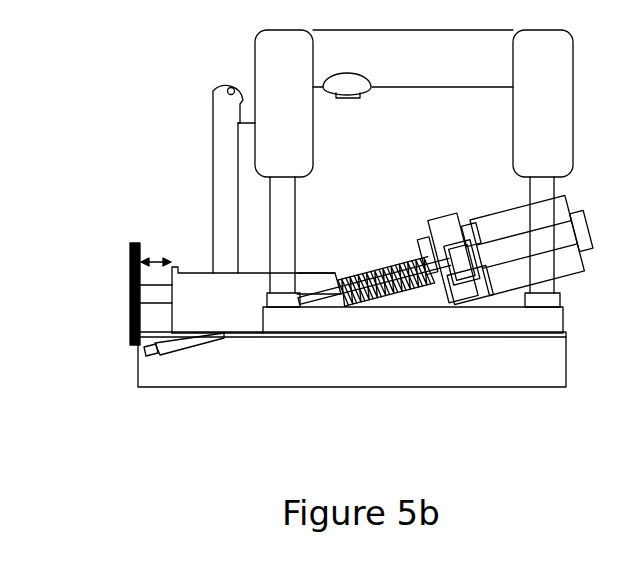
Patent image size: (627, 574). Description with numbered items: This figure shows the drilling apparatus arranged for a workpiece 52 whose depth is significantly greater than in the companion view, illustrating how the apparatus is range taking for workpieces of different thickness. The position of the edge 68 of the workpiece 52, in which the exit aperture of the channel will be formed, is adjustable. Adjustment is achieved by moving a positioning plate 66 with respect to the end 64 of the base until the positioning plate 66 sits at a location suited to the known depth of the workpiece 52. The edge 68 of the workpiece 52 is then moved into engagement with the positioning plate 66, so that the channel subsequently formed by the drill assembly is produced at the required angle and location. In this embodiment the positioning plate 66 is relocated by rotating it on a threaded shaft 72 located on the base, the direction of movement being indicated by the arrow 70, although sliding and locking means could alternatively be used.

The workpiece 52 is at (327, 388).
The end of the base 64 is at (166, 316).
The positioning plate 66 is at (130, 243).
The edge of the workpiece 68 is at (131, 352).
The arrow 70 is at (153, 262).
The threaded shaft 72 is at (153, 295).